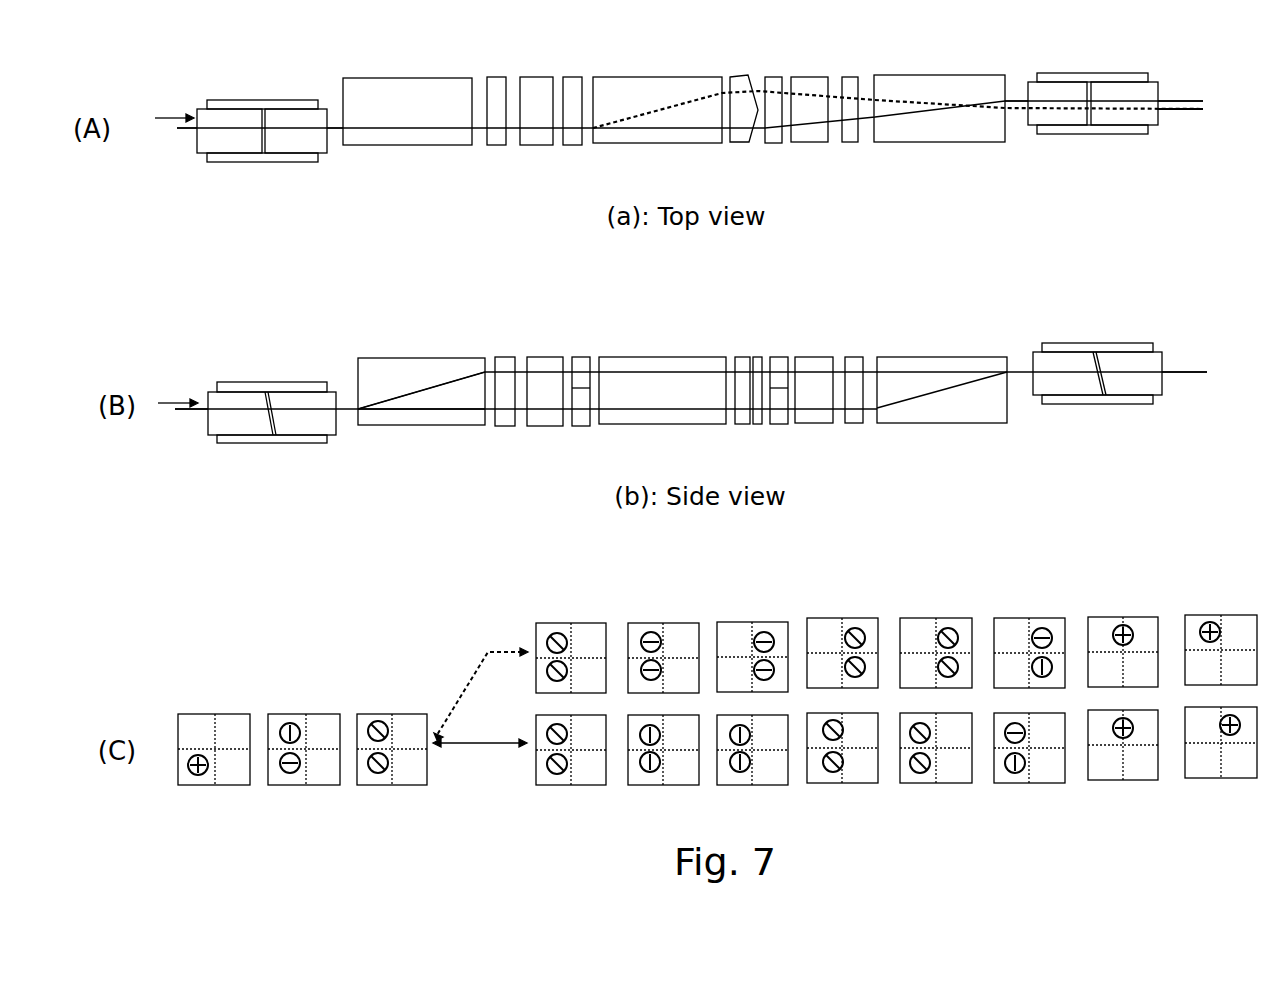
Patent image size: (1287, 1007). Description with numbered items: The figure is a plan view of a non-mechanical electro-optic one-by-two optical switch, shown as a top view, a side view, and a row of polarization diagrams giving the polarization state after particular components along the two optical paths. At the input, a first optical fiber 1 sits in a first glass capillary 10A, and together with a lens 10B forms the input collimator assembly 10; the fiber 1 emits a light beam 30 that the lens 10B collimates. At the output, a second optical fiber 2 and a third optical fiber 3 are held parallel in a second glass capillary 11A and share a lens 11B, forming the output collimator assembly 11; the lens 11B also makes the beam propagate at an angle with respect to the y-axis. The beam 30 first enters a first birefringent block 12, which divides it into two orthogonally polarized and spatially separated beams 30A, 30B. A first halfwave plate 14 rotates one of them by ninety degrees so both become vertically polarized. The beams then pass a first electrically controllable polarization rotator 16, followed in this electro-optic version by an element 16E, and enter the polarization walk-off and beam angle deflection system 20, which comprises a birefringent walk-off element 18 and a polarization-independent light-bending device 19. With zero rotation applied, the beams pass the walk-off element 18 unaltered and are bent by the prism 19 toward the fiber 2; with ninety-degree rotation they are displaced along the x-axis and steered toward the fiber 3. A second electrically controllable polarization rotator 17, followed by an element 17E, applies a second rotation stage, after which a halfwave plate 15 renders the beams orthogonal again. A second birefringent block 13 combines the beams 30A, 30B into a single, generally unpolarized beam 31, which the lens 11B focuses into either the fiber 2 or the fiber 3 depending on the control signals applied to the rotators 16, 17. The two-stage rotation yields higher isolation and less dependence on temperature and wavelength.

The first optical fiber 1 is at (179, 150).
The second optical fiber 2 is at (1180, 79).
The third optical fiber 3 is at (1180, 130).
The input fiber collimator 10 is at (261, 420).
The first glass capillary 10A is at (232, 148).
The lens 10B is at (296, 147).
The output fiber collimator 11 is at (1142, 402).
The second glass capillary 11A is at (1068, 118).
The lens 11B is at (1118, 117).
The first birefringent block 12 is at (376, 409).
The second birefringent block 13 is at (1016, 405).
The first halfwave plate 14 is at (442, 409).
The halfwave plate 15 is at (946, 408).
The first electrically controllable polarization rotator 16 is at (563, 431).
The first Faraday rotator output plane 16E is at (622, 409).
The second electrically controllable polarization rotator 17 is at (881, 430).
The second Faraday rotator output plane 17E is at (812, 408).
The birefringent walk-off element 18 is at (659, 270).
The polarization-independent light-bending device 19 is at (741, 269).
The polarization walk-off and beam angle deflection system 20 is at (690, 405).
The light beam 30 is at (418, 138).
The beam 30A is at (425, 412).
The beam 30B is at (470, 372).
The single beam 31 is at (1192, 350).